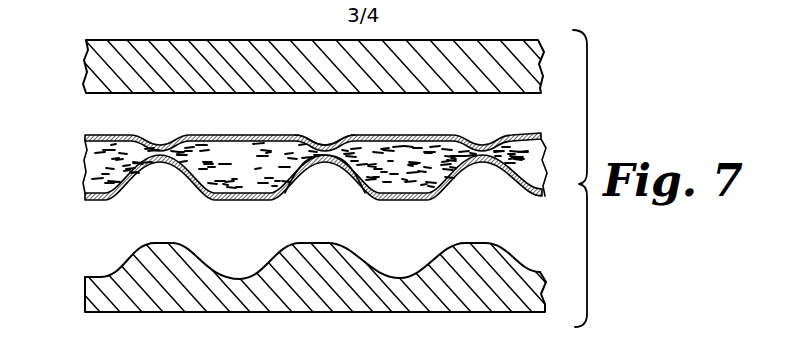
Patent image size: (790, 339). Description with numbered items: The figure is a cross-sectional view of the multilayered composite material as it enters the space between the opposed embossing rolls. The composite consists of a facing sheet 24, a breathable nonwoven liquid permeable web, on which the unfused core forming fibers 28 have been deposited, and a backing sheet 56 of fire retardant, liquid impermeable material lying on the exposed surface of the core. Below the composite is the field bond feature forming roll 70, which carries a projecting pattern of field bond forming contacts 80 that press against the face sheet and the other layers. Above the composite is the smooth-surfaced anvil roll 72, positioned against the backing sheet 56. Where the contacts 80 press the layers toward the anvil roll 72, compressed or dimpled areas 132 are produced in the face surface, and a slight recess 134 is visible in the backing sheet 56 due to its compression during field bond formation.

The anvil roll 72 is at (82, 68).
The backing sheet 56 is at (85, 138).
The core forming fibers 28 is at (85, 168).
The facing sheet 24 is at (85, 203).
The recess 134 is at (332, 130).
The dimpled areas 132 is at (328, 178).
The field bond feature forming roll 70 is at (90, 300).
The field bond forming contacts 80 is at (178, 247).